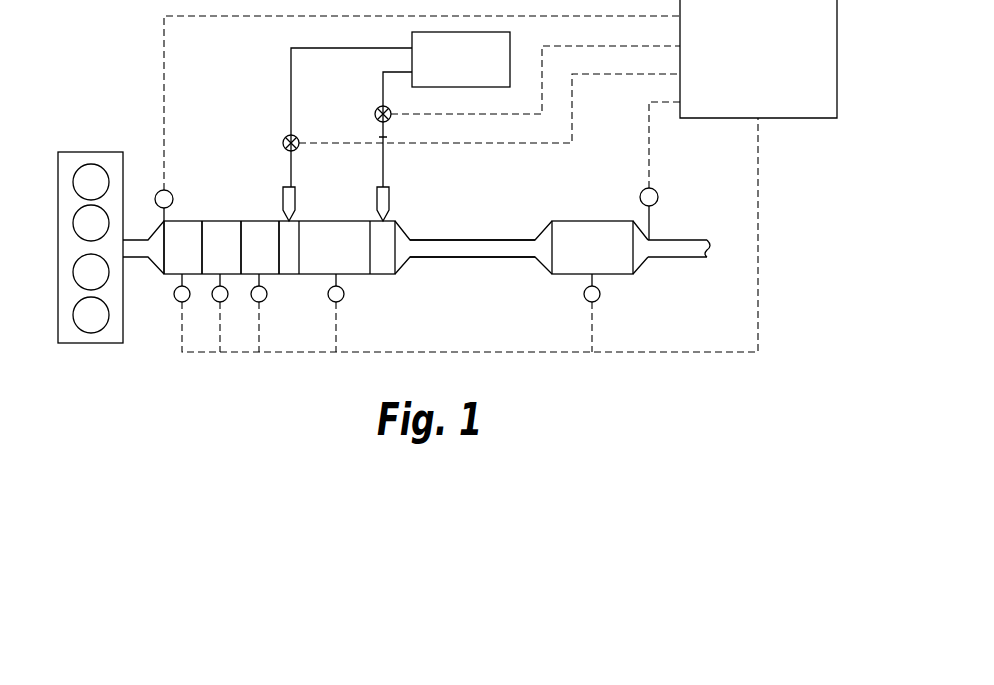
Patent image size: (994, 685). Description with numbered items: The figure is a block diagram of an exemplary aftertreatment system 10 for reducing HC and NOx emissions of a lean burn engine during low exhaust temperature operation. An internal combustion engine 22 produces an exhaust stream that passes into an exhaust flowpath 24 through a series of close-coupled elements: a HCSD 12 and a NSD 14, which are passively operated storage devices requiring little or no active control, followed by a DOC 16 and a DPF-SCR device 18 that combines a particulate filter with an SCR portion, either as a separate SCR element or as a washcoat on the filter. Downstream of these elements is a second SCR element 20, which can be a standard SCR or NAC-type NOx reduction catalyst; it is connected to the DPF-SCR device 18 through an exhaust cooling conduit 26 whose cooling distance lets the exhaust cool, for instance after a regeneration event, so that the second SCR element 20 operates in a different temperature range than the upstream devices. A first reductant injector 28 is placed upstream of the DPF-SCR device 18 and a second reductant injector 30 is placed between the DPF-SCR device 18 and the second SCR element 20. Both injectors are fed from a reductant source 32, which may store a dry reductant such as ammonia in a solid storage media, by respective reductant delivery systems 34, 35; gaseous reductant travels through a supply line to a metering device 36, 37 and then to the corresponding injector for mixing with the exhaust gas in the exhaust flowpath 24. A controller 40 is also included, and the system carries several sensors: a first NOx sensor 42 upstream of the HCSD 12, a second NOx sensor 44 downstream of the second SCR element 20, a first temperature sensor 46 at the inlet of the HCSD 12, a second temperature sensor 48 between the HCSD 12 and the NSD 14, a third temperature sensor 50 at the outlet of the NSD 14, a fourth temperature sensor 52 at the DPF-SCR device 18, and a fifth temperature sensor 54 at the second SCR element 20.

The aftertreatment system 10 is at (202, 386).
The HCSD 12 is at (195, 258).
The NSD 14 is at (233, 258).
The DOC 16 is at (271, 258).
The DPF-SCR device 18 is at (347, 258).
The second SCR element 20 is at (600, 247).
The internal combustion engine 22 is at (68, 346).
The exhaust flowpath 24 is at (680, 258).
The exhaust cooling conduit 26 is at (478, 258).
The first reductant injector 28 is at (283, 195).
The second reductant injector 30 is at (389, 201).
The reductant source 32 is at (473, 73).
The reductant delivery system 34 is at (290, 49).
The reductant delivery system 35 is at (376, 92).
The metering device 36 is at (283, 143).
The metering device 37 is at (375, 117).
The controller 40 is at (770, 71).
The first NOx sensor 42 is at (156, 199).
The second NOx sensor 44 is at (641, 196).
The first temperature sensor 46 is at (185, 302).
The second temperature sensor 48 is at (223, 302).
The third temperature sensor 50 is at (267, 298).
The fourth temperature sensor 52 is at (344, 298).
The fifth temperature sensor 54 is at (600, 298).